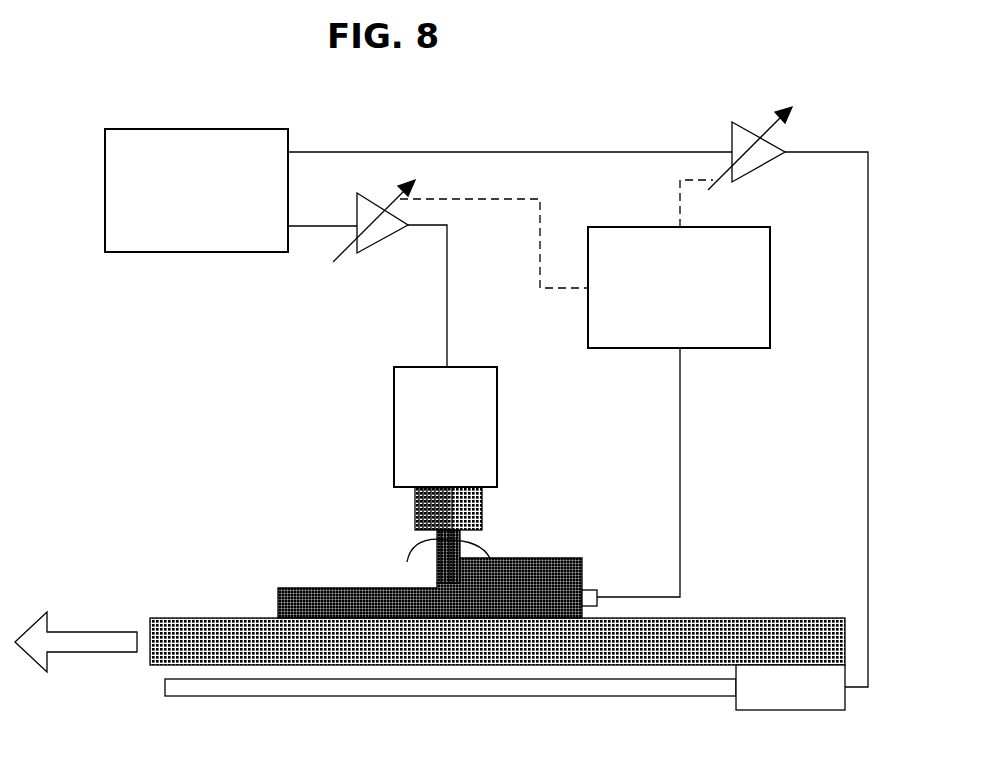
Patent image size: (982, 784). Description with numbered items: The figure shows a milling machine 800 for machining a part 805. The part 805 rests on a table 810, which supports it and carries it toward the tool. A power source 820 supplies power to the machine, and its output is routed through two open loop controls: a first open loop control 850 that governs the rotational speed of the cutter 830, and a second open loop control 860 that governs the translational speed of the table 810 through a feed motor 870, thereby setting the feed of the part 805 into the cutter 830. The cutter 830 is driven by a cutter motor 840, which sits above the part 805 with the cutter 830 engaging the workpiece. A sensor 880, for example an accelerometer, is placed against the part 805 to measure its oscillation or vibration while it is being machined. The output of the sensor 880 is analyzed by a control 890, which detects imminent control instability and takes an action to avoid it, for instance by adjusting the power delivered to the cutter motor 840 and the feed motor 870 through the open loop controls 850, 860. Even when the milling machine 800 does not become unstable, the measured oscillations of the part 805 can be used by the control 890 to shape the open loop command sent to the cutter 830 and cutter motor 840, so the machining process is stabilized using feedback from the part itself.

The milling machine 800 is at (687, 68).
The part 805 is at (308, 587).
The table 810 is at (770, 618).
The power source 820 is at (224, 128).
The cutter 830 is at (433, 568).
The cutter motor 840 is at (414, 366).
The first open loop control 850 is at (372, 250).
The second open loop control 860 is at (757, 168).
The feed motor 870 is at (808, 710).
The sensor 880 is at (590, 588).
The control 890 is at (770, 295).